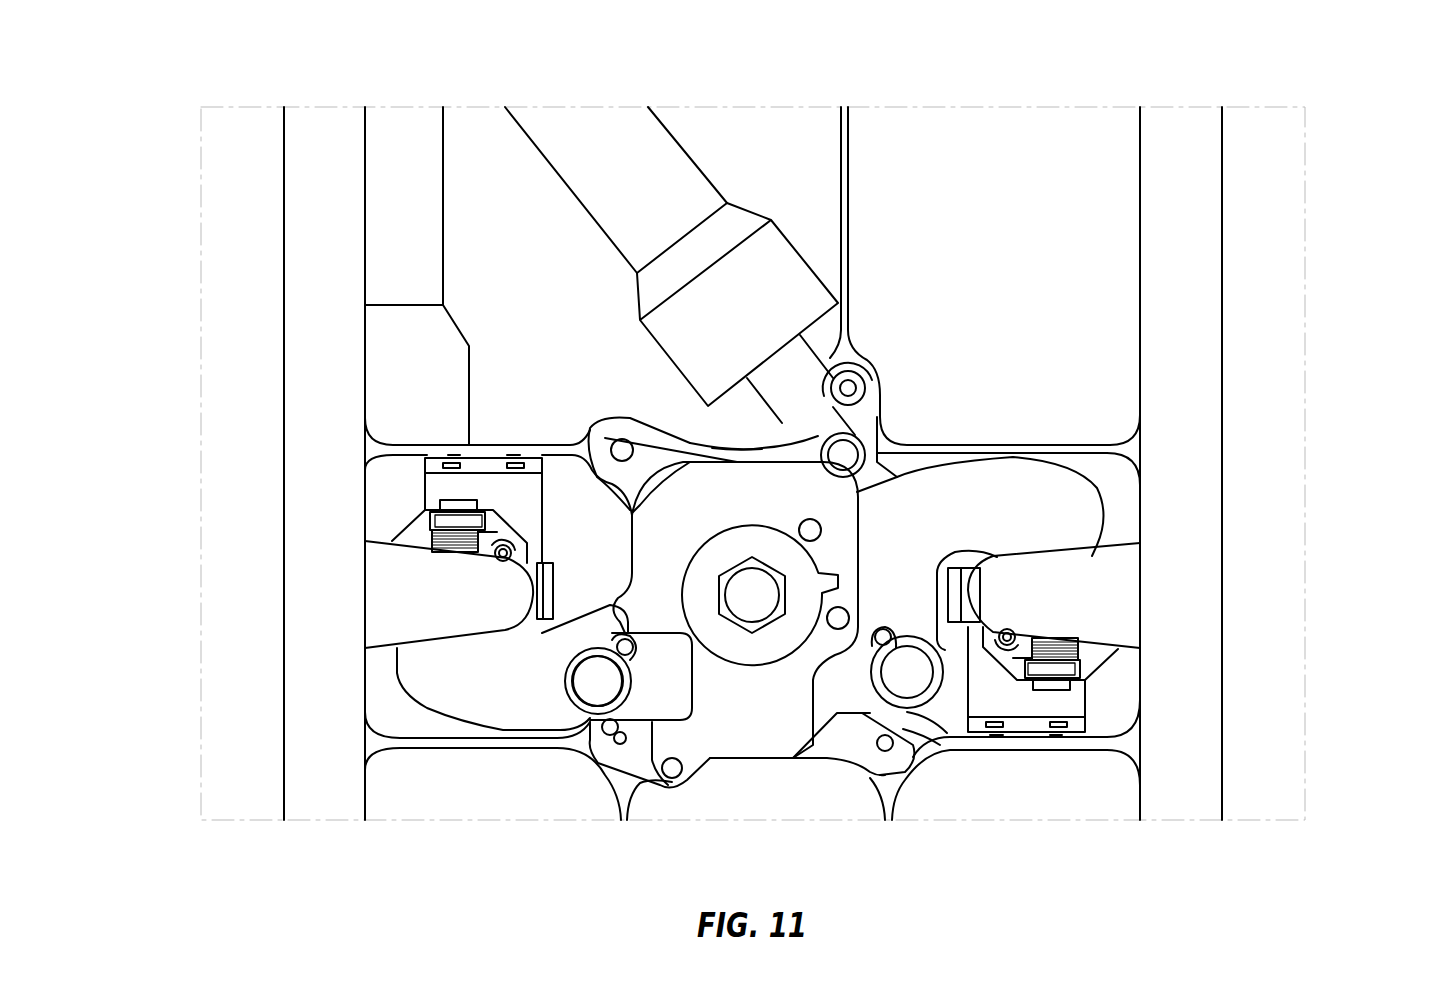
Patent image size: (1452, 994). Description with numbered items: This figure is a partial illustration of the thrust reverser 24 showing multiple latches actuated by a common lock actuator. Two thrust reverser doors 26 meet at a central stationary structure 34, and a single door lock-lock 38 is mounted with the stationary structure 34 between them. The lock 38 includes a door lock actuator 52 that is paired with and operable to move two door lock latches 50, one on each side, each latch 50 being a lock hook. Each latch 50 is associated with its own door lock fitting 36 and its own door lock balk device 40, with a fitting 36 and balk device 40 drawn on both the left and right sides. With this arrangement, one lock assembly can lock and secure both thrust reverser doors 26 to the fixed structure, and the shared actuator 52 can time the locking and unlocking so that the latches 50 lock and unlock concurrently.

The thrust reverser 24 is at (1337, 105).
The thrust reverser door 26 is at (200, 484).
The stationary structure 34 is at (1171, 118).
The door lock fitting 36 is at (438, 612).
The door lock-lock 38 is at (753, 762).
The door lock balk device 40 is at (549, 577).
The door lock latch 50 is at (537, 658).
The door lock actuator 52 is at (743, 669).